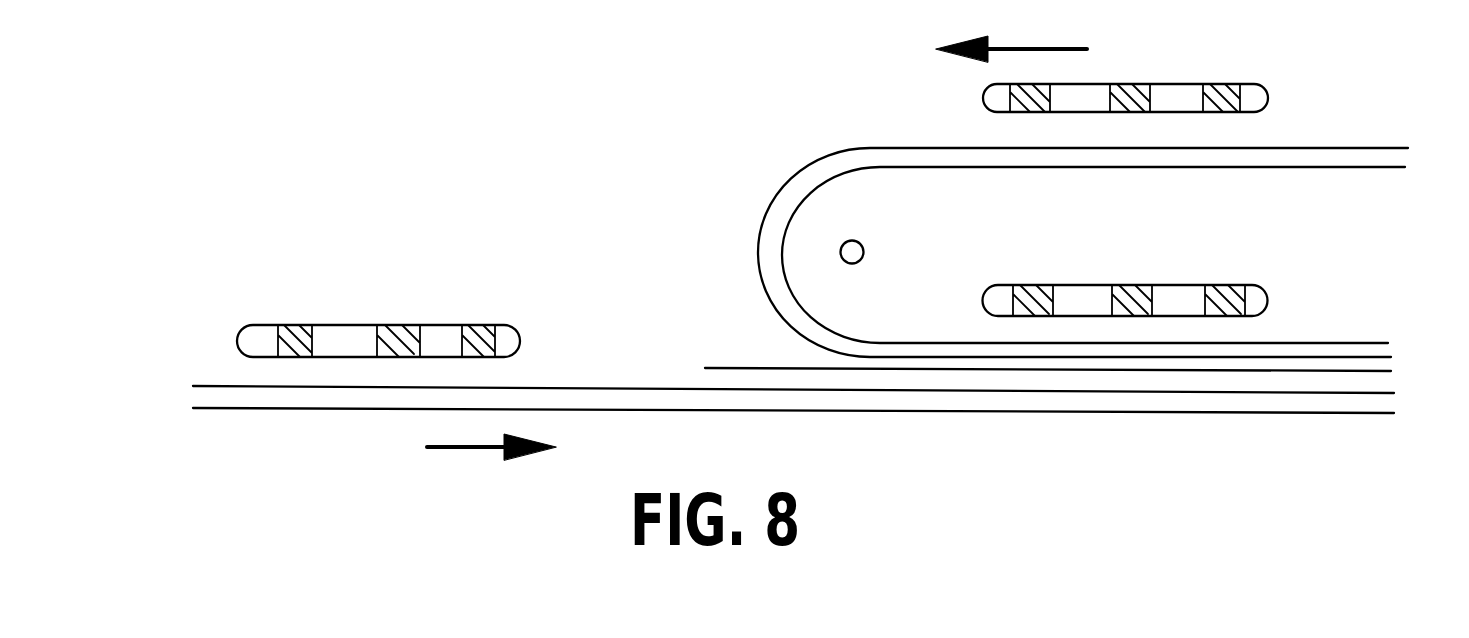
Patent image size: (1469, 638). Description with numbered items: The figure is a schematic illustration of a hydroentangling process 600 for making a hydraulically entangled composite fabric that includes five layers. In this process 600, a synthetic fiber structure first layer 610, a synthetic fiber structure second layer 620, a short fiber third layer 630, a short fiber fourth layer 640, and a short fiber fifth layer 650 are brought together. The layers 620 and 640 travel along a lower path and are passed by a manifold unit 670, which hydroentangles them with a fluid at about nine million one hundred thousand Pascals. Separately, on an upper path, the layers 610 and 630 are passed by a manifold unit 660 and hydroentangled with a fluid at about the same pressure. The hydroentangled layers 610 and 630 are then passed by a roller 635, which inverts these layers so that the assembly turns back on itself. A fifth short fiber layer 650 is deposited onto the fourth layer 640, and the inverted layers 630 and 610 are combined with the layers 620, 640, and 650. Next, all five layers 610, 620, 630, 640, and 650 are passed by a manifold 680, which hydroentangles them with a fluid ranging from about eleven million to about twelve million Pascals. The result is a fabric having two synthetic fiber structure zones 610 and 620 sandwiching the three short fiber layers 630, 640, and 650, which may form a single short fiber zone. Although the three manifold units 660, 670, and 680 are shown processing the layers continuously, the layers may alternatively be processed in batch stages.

The hydroentangling process 600 is at (583, 141).
The synthetic fiber structure first layer 610 is at (1370, 172).
The synthetic fiber structure second layer 620 is at (257, 410).
The short fiber third layer 630 is at (1348, 147).
The roller 635 is at (863, 247).
The short fiber fourth layer 640 is at (217, 385).
The short fiber fifth layer 650 is at (747, 367).
The manifold unit 660 is at (1255, 88).
The manifold unit 670 is at (515, 338).
The manifold 680 is at (1258, 302).